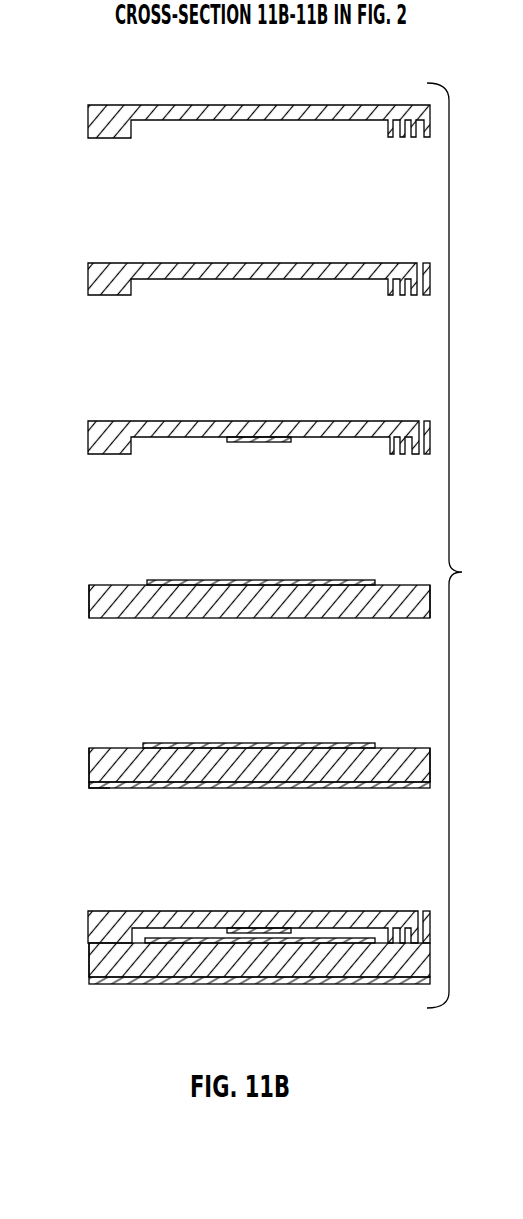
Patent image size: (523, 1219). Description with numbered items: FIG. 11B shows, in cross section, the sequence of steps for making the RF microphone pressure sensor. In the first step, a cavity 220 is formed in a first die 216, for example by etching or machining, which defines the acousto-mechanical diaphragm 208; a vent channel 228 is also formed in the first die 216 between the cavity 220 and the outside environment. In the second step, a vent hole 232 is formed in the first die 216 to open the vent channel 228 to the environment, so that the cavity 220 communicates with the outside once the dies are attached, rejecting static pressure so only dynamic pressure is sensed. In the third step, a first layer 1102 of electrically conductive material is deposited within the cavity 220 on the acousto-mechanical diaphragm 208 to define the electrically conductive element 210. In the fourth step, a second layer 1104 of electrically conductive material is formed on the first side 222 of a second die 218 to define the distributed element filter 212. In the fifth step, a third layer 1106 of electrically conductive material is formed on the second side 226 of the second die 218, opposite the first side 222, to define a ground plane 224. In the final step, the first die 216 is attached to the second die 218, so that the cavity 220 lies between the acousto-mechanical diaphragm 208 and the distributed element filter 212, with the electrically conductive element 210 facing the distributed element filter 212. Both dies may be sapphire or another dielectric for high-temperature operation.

The acousto-mechanical diaphragm 208 is at (286, 94).
The first die 216 is at (88, 118).
The cavity 220 is at (225, 130).
The vent channel 228 is at (402, 146).
The vent hole 232 is at (421, 259).
The electrically conductive element 210 is at (252, 444).
The first layer of electrically conductive material 1102 is at (288, 442).
The second layer of electrically conductive material 1104 is at (147, 583).
The distributed element filter 212 is at (273, 563).
The second die 218 is at (88, 598).
The first side of the second die 222 is at (390, 584).
The second side of the second die 226 is at (203, 785).
The ground plane 224 is at (289, 795).
The third layer of electrically conductive material 1106 is at (90, 786).